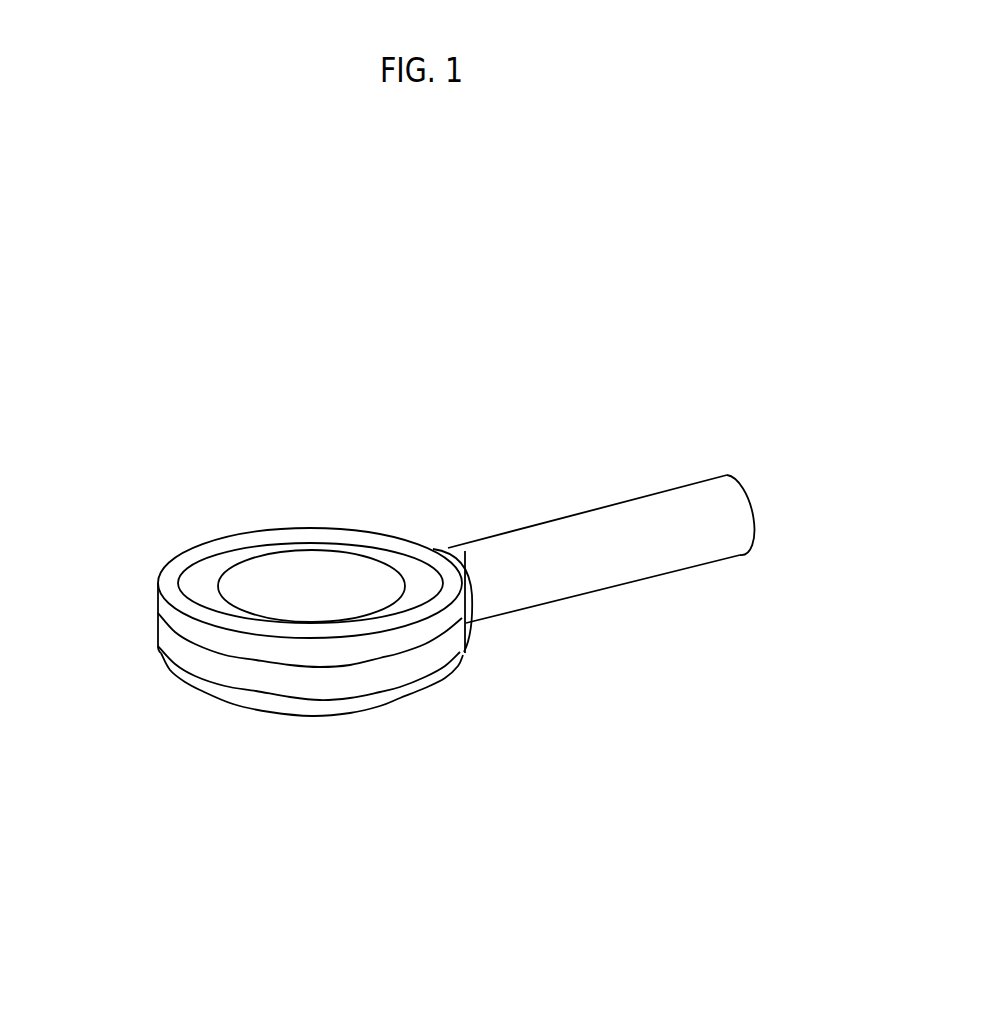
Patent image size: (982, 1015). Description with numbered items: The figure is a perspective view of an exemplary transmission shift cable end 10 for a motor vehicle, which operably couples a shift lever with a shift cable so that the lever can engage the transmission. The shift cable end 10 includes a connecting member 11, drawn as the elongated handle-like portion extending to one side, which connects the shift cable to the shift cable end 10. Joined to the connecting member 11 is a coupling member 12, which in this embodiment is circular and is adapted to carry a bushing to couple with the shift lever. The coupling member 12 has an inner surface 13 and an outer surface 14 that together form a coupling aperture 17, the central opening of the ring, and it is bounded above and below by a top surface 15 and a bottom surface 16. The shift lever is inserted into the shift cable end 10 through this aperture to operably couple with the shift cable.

The transmission shift cable end 10 is at (465, 480).
The connecting member 11 is at (672, 533).
The coupling member 12 is at (314, 521).
The inner surface 13 is at (358, 557).
The outer surface 14 is at (428, 662).
The top surface 15 is at (201, 582).
The bottom surface 16 is at (302, 717).
The coupling aperture 17 is at (300, 590).